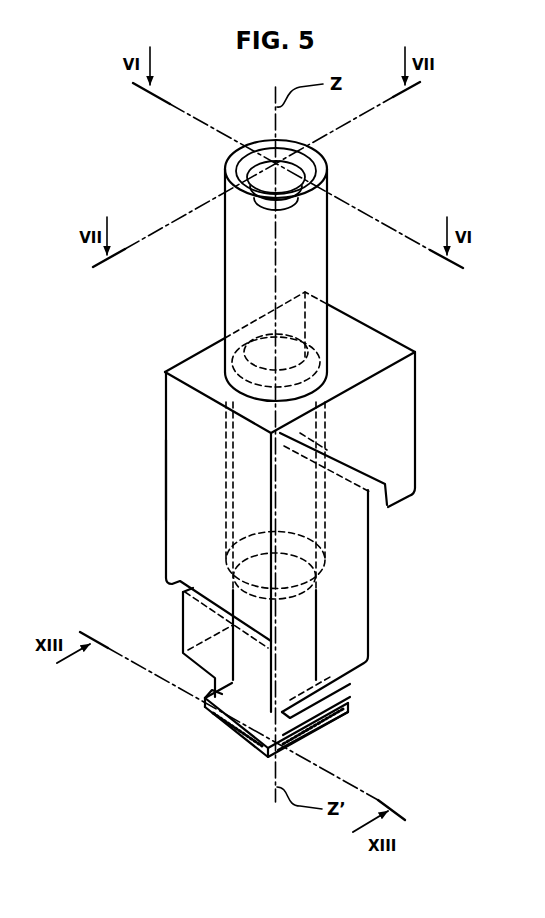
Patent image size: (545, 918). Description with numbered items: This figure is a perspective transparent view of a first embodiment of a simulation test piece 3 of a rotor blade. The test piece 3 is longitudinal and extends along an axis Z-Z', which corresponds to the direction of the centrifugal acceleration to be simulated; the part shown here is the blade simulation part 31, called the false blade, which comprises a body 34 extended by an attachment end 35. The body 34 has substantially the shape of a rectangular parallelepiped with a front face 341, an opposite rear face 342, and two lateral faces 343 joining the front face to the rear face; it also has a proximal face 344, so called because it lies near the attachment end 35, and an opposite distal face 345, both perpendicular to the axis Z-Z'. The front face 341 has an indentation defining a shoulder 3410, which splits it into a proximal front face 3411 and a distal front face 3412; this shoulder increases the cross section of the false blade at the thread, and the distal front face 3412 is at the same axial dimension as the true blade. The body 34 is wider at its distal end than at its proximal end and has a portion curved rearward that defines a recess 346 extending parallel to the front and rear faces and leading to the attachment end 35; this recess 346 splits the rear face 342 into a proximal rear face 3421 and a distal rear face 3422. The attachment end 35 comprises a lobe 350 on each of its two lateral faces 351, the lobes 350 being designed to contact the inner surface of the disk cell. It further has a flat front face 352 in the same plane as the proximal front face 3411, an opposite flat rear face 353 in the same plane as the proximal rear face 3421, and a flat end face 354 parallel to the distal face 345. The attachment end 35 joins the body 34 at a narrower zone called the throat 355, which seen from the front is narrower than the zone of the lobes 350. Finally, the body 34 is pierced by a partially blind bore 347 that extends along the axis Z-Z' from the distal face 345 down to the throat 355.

The test piece 3 is at (112, 588).
The blade simulation part 31 is at (134, 442).
The body 34 is at (382, 663).
The front face 341 is at (156, 503).
The shoulder 3410 is at (169, 598).
The proximal front face 3411 is at (196, 632).
The distal front face 3412 is at (184, 475).
The rear face 342 is at (426, 441).
The proximal rear face 3421 is at (373, 591).
The distal rear face 3422 is at (386, 331).
The lateral face 343 is at (393, 413).
The proximal face 344 is at (355, 680).
The distal face 345 is at (353, 345).
The recess 346 is at (378, 489).
The partially blind bore 347 is at (250, 388).
The attachment end 35 is at (130, 655).
The lobe 350 is at (243, 738).
The lateral face 351 is at (330, 705).
The front face 352 is at (212, 715).
The rear face 353 is at (345, 695).
The end face 354 is at (315, 735).
The throat 355 is at (206, 693).